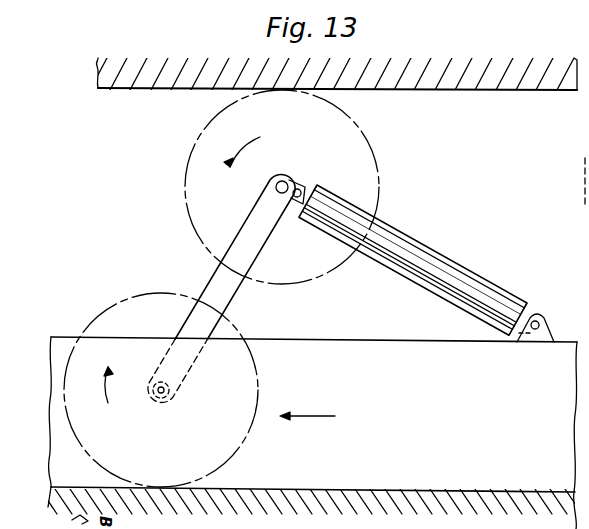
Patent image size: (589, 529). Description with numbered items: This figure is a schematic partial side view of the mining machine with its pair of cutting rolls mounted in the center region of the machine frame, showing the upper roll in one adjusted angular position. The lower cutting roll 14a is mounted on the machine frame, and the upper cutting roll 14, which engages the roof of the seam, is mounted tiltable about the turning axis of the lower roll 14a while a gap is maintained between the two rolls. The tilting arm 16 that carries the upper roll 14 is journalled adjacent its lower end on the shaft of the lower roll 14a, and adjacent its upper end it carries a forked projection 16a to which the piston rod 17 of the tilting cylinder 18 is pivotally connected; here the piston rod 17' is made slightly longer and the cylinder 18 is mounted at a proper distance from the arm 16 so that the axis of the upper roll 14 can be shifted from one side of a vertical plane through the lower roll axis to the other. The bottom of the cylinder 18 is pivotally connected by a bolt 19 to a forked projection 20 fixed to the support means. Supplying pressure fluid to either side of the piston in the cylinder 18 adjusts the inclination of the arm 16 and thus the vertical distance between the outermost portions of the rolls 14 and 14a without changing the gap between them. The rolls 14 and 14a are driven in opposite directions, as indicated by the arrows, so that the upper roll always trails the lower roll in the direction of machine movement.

The upper cutting roll 14 is at (375, 153).
The lower cutting roll 14a is at (258, 392).
The tilting arm 16 is at (211, 293).
The forked projection 16a is at (298, 190).
The piston rod 17 is at (323, 187).
The piston rod 17' is at (323, 187).
The tilting cylinder 18 is at (440, 257).
The bolt 19 is at (538, 320).
The forked projection 20 is at (549, 331).